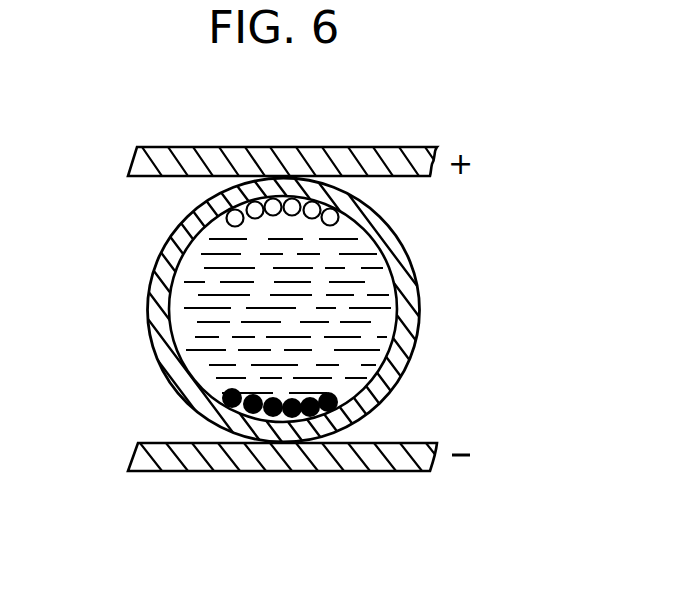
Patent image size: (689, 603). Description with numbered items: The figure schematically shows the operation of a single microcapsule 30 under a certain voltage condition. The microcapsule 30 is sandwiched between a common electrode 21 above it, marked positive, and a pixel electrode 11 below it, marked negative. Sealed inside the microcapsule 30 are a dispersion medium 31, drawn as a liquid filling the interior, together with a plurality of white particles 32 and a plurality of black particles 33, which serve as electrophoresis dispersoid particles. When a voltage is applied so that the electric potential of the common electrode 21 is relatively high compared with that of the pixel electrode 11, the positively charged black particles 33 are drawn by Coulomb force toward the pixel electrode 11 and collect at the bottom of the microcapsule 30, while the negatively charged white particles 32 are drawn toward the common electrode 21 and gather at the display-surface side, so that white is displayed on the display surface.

The common electrode 21 is at (388, 149).
The pixel electrode 11 is at (329, 458).
The microcapsule 30 is at (408, 299).
The dispersion medium 31 is at (205, 324).
The white particles 32 is at (247, 203).
The black particles 33 is at (345, 388).